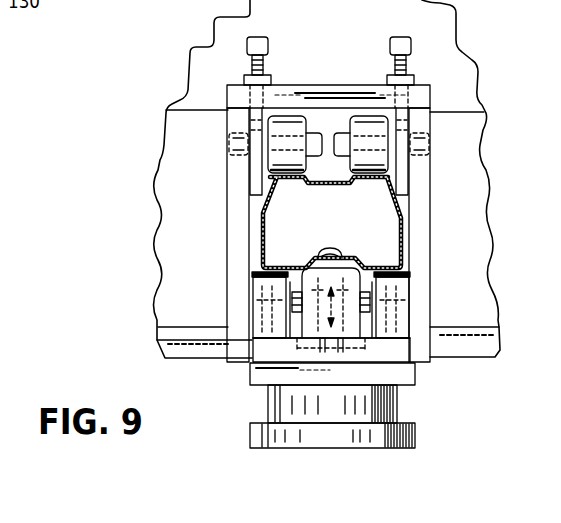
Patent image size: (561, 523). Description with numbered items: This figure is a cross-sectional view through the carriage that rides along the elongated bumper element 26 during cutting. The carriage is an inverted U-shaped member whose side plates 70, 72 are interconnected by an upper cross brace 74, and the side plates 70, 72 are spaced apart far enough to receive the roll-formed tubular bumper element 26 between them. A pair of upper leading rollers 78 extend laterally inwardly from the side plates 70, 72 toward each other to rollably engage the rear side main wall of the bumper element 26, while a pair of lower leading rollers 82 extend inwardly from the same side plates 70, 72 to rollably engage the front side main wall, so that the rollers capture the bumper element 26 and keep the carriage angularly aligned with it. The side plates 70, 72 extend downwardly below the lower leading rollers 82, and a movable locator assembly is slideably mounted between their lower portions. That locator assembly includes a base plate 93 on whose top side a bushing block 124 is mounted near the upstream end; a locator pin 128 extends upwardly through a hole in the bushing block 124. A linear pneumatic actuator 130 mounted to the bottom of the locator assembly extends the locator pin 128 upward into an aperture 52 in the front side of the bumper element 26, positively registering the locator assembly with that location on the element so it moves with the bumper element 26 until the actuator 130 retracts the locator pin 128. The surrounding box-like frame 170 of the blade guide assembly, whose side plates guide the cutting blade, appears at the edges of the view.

The box-like frame 170 is at (487, 112).
The side plate 70 is at (419, 125).
The upper cross brace 74 is at (313, 85).
The side plate 72 is at (240, 133).
The upper leading rollers 78 is at (290, 120).
The bumper element 26 is at (264, 234).
The locator pin 128 is at (330, 249).
The bushing block 124 is at (316, 262).
The aperture 52 is at (341, 262).
The lower leading rollers 82 is at (260, 332).
The base plate 93 is at (266, 352).
The linear pneumatic actuator 130 is at (408, 448).